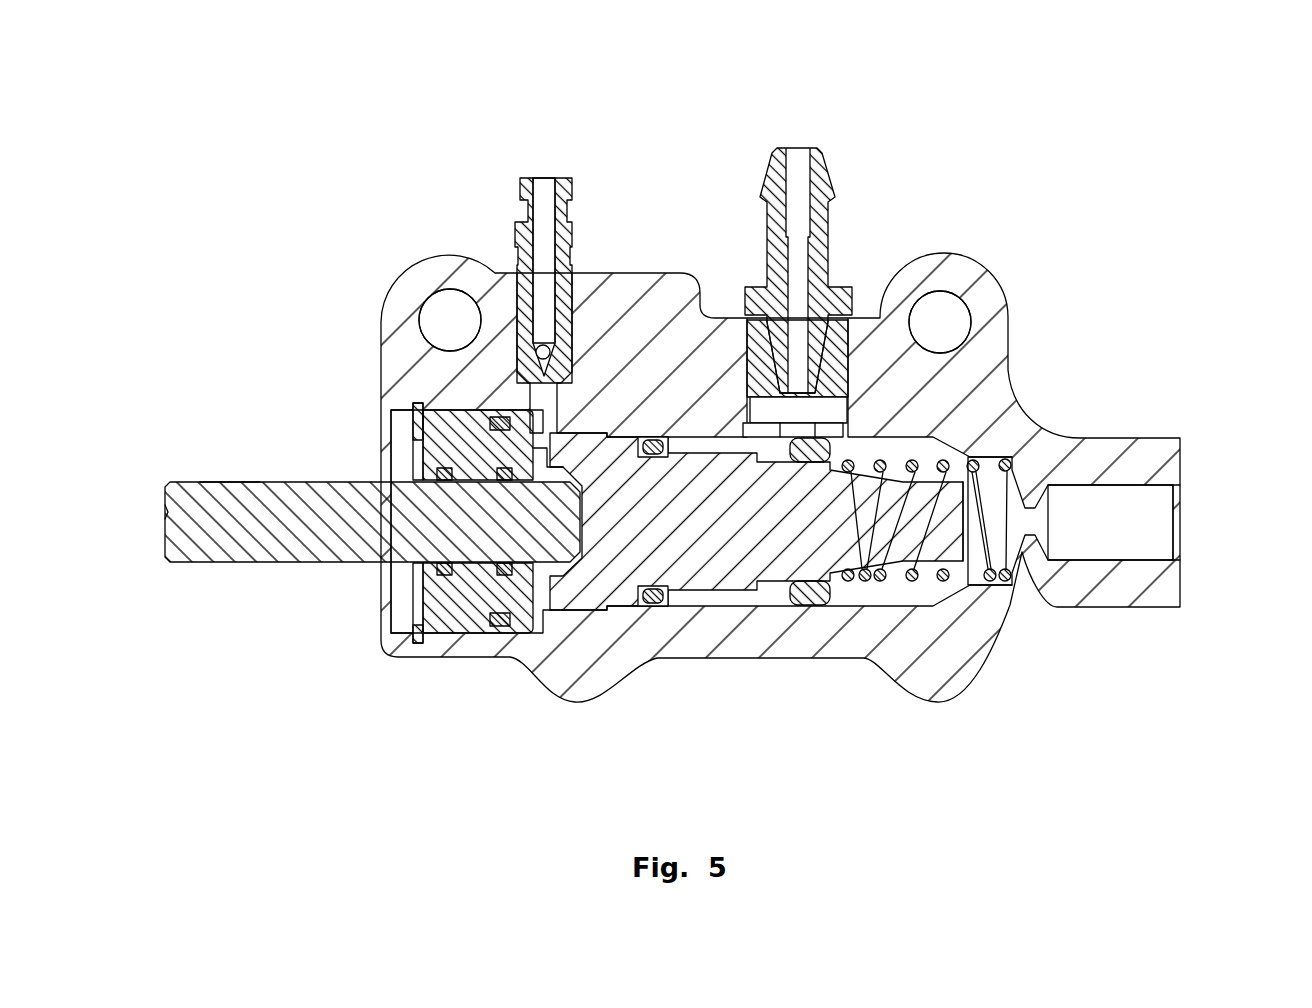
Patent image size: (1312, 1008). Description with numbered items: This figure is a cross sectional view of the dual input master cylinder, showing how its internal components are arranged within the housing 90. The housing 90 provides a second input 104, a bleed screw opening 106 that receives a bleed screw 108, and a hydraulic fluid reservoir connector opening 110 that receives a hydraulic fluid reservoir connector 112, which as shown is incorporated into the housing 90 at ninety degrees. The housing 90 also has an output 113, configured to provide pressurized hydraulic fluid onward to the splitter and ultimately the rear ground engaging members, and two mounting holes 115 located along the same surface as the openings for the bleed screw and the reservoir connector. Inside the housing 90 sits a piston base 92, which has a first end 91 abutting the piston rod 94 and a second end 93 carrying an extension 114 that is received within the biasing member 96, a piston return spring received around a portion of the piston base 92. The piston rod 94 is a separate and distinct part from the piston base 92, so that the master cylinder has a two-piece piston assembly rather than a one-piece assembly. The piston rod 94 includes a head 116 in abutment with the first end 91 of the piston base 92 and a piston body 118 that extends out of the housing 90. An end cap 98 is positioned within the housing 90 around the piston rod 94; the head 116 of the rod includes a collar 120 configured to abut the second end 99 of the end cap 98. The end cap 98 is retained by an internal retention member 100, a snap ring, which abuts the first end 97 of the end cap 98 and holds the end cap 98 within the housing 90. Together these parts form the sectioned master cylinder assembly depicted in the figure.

The housing 90 is at (648, 270).
The first end 91 is at (560, 465).
The piston base 92 is at (762, 585).
The second end 93 is at (910, 572).
The piston rod 94 is at (258, 532).
The biasing member 96 is at (1015, 468).
The first end 97 is at (420, 450).
The end cap 98 is at (477, 612).
The second end 99 is at (545, 622).
The internal retention member 100 is at (413, 590).
The second input 104 is at (158, 522).
The bleed screw opening 106 is at (507, 275).
The bleed screw 108 is at (560, 192).
The hydraulic fluid reservoir connector opening 110 is at (860, 323).
The hydraulic fluid reservoir connector 112 is at (818, 160).
The output 113 is at (1152, 522).
The extension 114 is at (950, 530).
The mounting holes 115 is at (443, 322).
The head 116 is at (572, 508).
The piston body 118 is at (238, 492).
The collar 120 is at (557, 582).